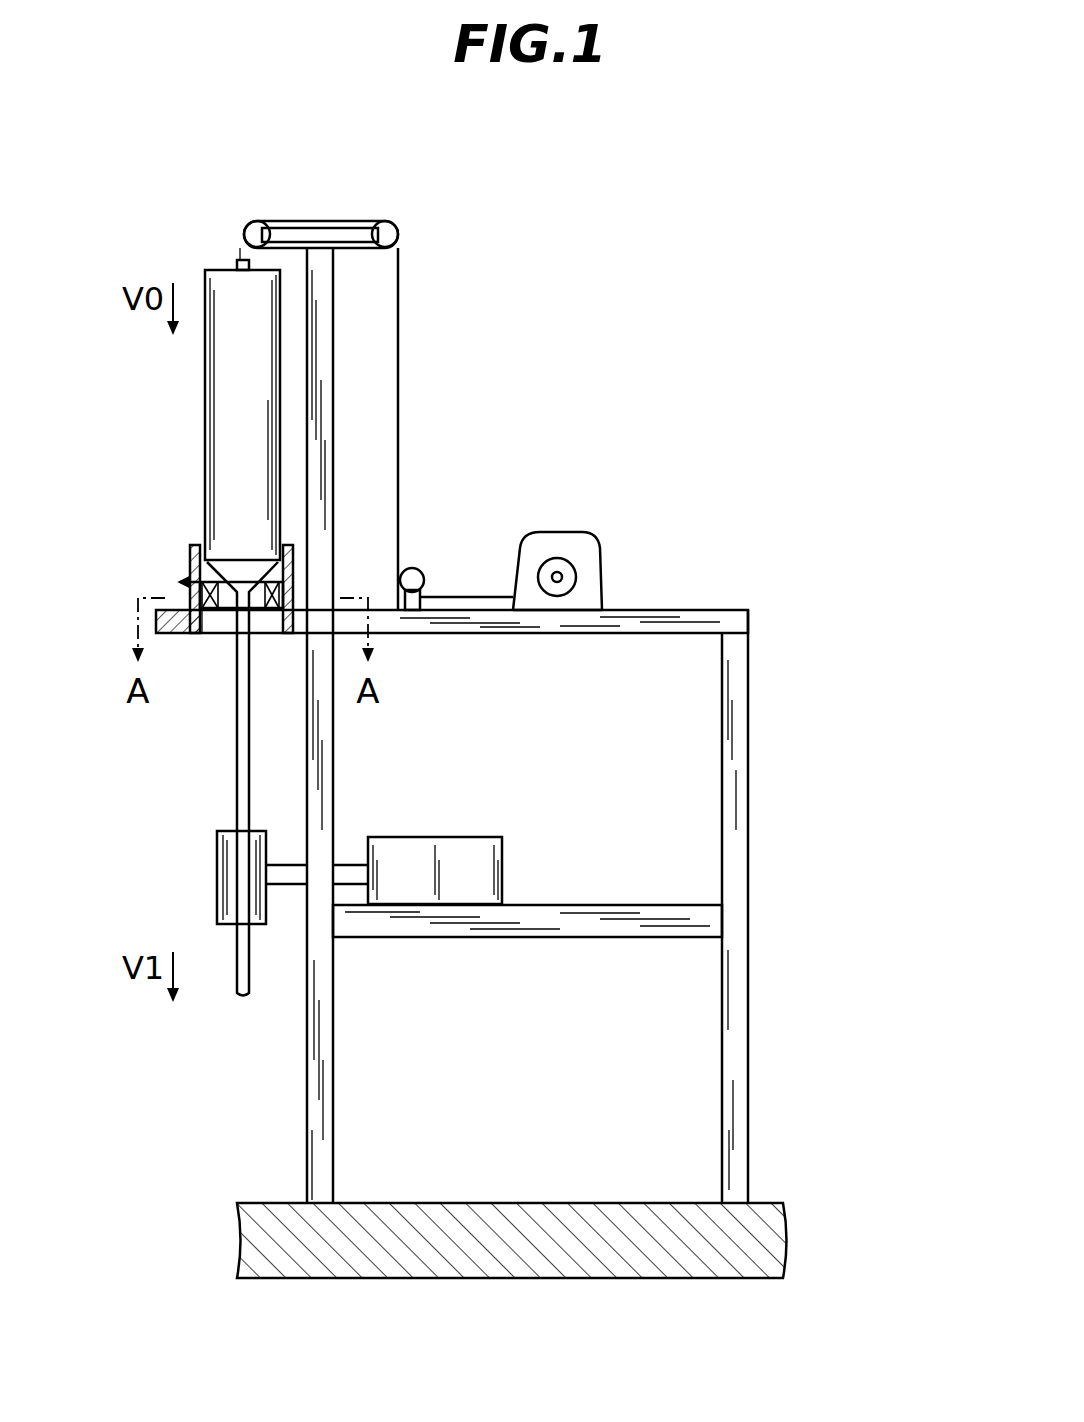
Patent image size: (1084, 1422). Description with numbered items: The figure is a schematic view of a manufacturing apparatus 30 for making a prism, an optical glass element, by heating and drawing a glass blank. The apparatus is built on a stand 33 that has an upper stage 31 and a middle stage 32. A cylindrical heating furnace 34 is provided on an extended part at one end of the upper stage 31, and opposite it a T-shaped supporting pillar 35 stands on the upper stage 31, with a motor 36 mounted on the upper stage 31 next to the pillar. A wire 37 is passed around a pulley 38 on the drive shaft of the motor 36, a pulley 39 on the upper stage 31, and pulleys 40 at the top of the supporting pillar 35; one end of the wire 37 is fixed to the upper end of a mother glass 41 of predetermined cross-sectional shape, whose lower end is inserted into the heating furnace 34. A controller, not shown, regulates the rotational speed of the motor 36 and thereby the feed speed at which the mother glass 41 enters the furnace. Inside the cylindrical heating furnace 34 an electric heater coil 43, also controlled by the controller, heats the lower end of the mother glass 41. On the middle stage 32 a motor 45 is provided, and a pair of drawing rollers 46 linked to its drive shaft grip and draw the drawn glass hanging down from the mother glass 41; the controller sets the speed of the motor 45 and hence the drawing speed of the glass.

The manufacturing apparatus 30 is at (407, 502).
The upper stage 31 is at (688, 608).
The middle stage 32 is at (590, 927).
The stand 33 is at (758, 830).
The cylindrical heating furnace 34 is at (190, 545).
The T-shaped supporting pillar 35 is at (335, 402).
The motor 36 is at (563, 533).
The wire 37 is at (398, 292).
The pulley 38 is at (570, 613).
The pulley 39 is at (425, 563).
The pulleys 40 is at (252, 218).
The mother glass 41 is at (205, 398).
The electric heater coil 43 is at (205, 635).
The motor 45 is at (440, 837).
The drawing rollers 46 is at (217, 859).